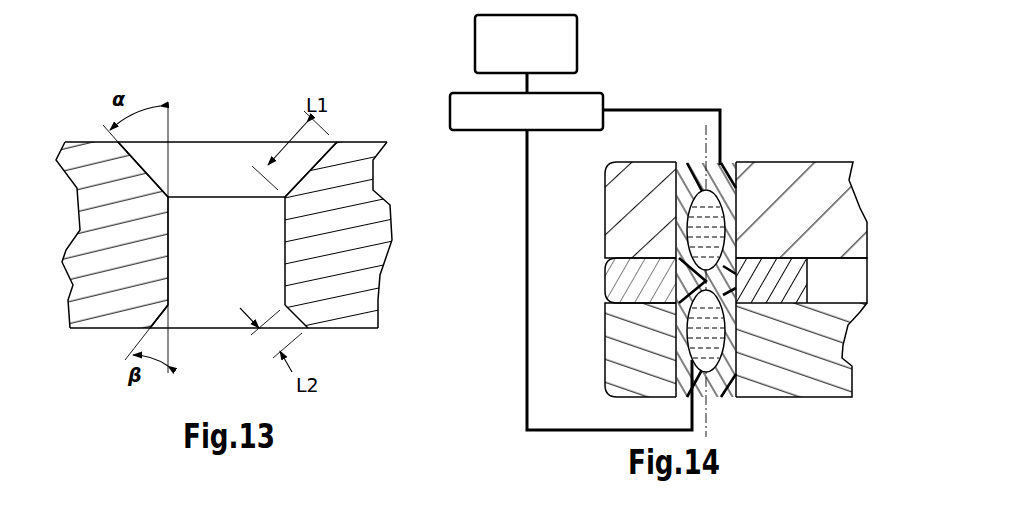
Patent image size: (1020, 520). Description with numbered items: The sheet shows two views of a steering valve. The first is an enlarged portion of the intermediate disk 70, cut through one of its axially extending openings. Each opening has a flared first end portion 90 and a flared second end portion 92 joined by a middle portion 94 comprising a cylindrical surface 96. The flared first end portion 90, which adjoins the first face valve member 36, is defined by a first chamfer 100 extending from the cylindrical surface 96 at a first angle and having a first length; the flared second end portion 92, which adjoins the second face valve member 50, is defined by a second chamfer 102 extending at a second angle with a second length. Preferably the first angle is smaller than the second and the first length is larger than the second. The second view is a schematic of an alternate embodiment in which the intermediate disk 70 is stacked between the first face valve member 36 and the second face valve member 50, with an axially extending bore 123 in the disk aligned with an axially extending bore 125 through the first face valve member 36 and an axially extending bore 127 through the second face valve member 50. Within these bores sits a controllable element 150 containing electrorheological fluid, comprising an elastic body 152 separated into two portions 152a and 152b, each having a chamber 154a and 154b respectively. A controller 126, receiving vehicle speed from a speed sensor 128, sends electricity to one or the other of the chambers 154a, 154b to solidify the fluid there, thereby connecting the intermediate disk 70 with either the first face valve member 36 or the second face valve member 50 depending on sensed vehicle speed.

In FIG. 14, the first face valve member 36 is at (800, 166).
In FIG. 14, the second face valve member 50 is at (822, 377).
In FIG. 13, the intermediate disk 70 is at (340, 288).
In FIG. 14, the intermediate disk 70 is at (662, 275).
In FIG. 13, the flared first end portion 90 is at (222, 165).
In FIG. 13, the flared second end portion 92 is at (226, 318).
In FIG. 13, the middle portion 94 is at (272, 275).
In FIG. 13, the cylindrical surface 96 is at (274, 231).
In FIG. 13, the first chamfer 100 is at (150, 170).
In FIG. 13, the second chamfer 102 is at (163, 315).
In FIG. 14, the axially extending bore 123 is at (690, 284).
In FIG. 14, the axially extending bore 125 is at (725, 176).
In FIG. 14, the controller 126 is at (466, 93).
In FIG. 14, the axially extending bore 127 is at (745, 395).
In FIG. 14, the speed sensor 128 is at (577, 48).
In FIG. 14, the controllable element 150 is at (702, 190).
In FIG. 14, the elastic body 152 is at (680, 208).
In FIG. 14, the first portion of elastic body 152a is at (845, 182).
In FIG. 14, the second portion of elastic body 152b is at (792, 345).
In FIG. 14, the first chamber 154a is at (855, 236).
In FIG. 14, the second chamber 154b is at (800, 318).